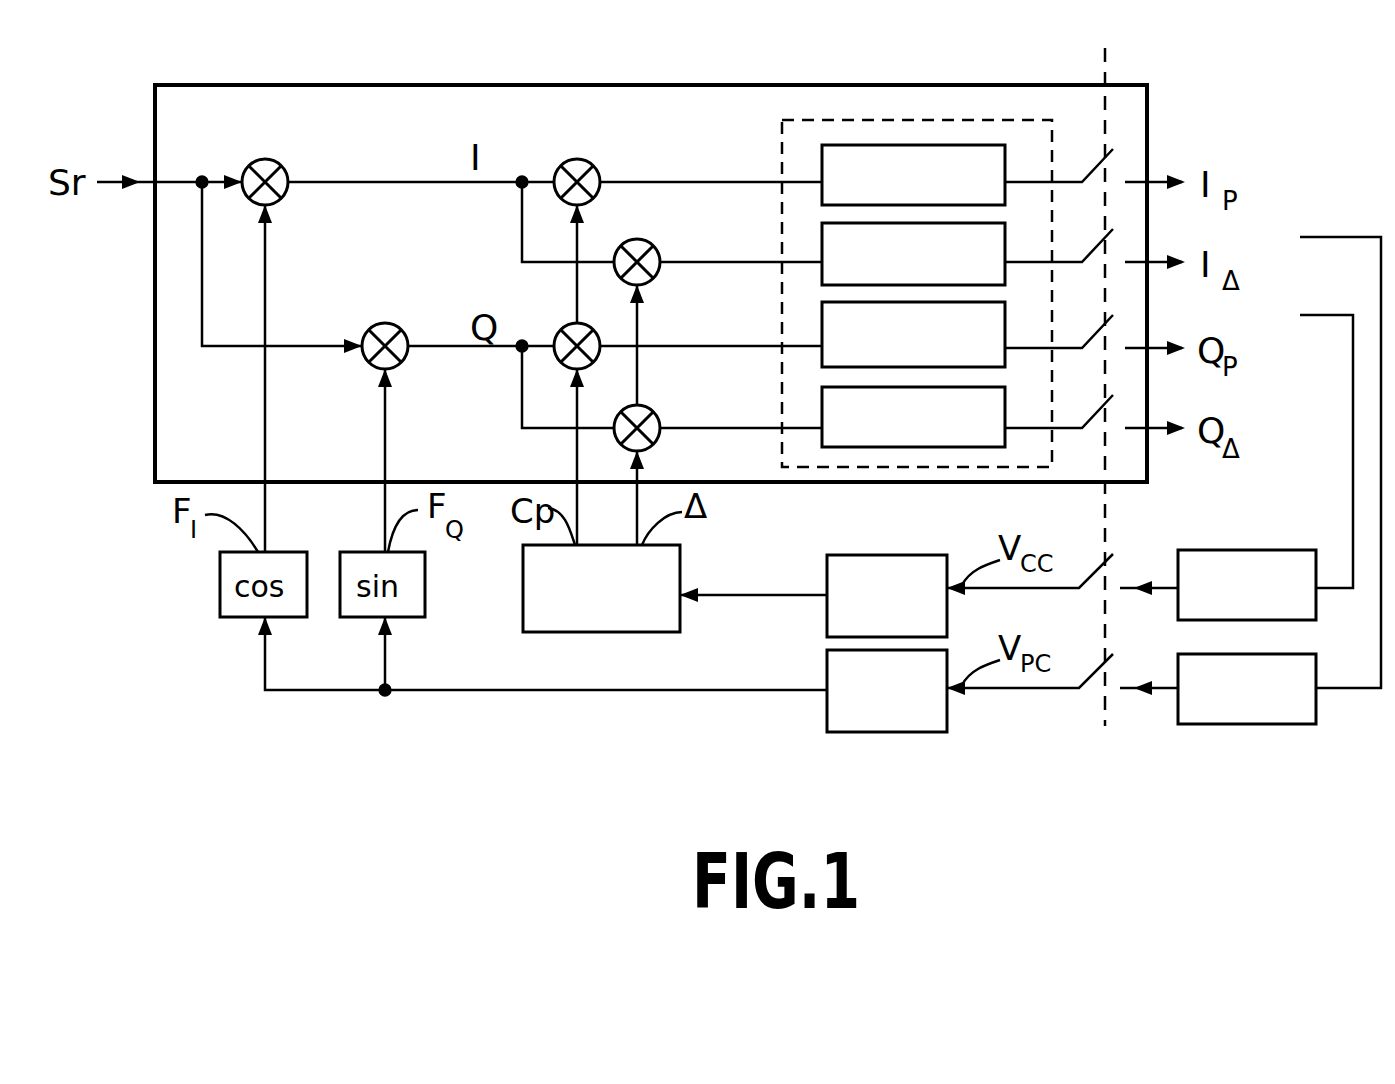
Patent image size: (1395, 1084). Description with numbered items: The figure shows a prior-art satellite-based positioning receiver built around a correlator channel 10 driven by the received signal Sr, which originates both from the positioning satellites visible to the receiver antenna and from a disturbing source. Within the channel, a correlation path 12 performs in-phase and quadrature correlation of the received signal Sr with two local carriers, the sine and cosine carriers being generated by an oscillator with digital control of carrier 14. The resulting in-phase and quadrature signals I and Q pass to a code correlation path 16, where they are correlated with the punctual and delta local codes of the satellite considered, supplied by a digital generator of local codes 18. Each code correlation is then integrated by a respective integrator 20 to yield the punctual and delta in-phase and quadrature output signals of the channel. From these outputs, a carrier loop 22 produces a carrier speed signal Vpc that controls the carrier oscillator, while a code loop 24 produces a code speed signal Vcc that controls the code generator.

The correlator channel 10 is at (518, 85).
The correlation path 12 is at (371, 152).
The oscillator with digital control of carrier 14 is at (880, 732).
The code correlation path 16 is at (669, 156).
The digital generator of local codes 18 is at (882, 555).
The integrator 20 is at (933, 120).
The carrier loop 22 is at (1245, 724).
The code loop 24 is at (1250, 550).